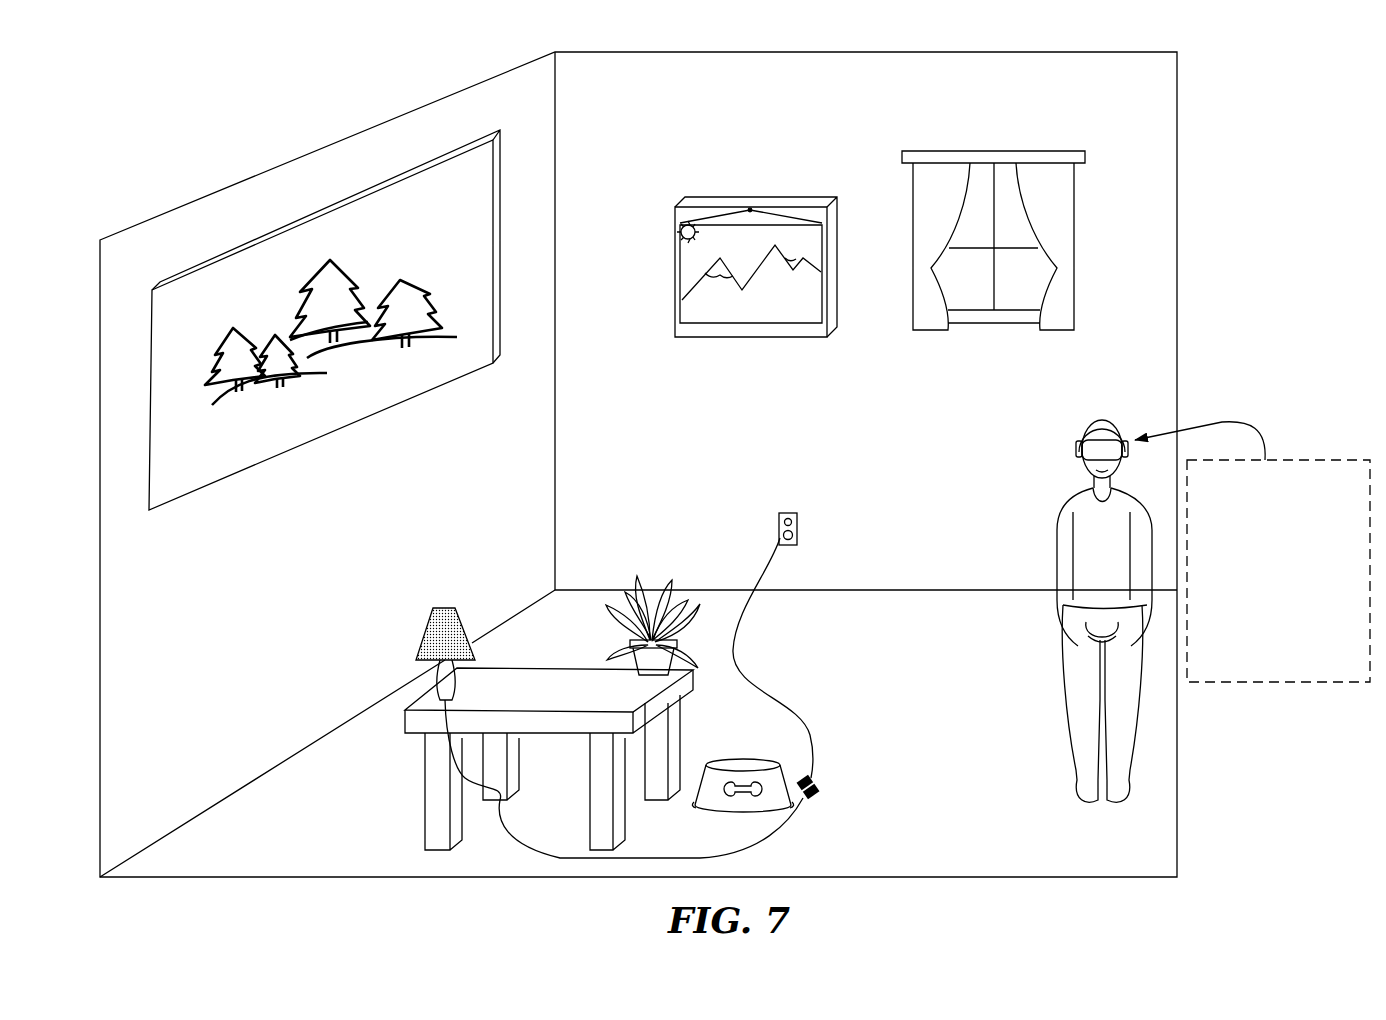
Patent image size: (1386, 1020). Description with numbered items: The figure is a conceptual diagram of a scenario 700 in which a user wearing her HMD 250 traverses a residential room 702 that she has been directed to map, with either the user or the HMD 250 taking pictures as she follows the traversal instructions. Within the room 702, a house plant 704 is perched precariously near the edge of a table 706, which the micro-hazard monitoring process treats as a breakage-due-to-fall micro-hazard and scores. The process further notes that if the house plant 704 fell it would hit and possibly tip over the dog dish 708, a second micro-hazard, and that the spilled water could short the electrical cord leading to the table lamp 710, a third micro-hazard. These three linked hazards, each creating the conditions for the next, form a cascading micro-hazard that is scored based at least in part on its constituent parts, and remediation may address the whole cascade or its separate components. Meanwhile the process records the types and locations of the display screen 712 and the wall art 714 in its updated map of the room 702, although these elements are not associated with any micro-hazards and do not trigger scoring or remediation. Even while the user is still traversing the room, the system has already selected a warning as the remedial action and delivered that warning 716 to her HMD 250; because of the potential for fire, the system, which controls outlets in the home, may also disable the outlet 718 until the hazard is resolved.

The scenario 700 is at (215, 172).
The residential room 702 is at (613, 135).
The house plant 704 is at (662, 572).
The table 706 is at (575, 670).
The dog dish 708 is at (743, 758).
The table lamp 710 is at (405, 650).
The display screen 712 is at (305, 462).
The wall art 714 is at (707, 345).
The warning 716 is at (1283, 455).
The outlet 718 is at (786, 508).
The HMD 250 is at (1068, 445).